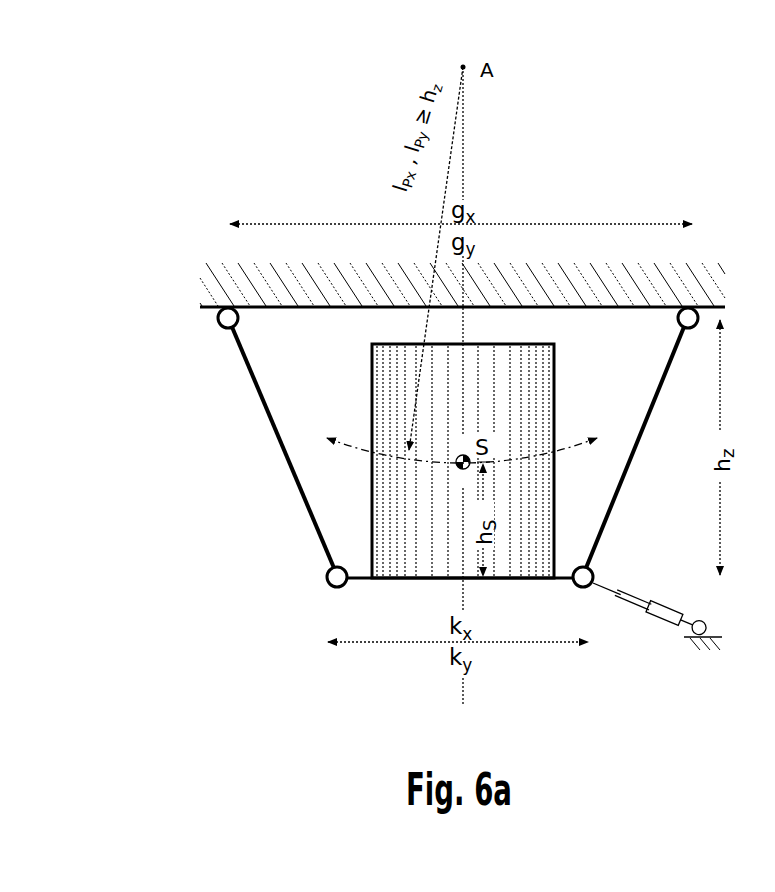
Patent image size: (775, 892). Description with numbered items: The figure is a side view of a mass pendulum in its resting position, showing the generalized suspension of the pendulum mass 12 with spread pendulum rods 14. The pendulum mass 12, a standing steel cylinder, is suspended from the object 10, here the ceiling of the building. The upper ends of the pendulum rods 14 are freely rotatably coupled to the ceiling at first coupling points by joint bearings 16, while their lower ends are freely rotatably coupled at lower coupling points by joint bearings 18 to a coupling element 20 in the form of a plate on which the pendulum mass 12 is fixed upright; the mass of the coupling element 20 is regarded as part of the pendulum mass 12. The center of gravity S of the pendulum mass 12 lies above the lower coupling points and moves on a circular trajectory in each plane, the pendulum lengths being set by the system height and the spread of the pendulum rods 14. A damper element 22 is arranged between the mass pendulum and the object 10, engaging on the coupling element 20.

The object 10 is at (200, 286).
The pendulum mass 12 is at (372, 378).
The pendulum rods 14 is at (280, 451).
The joint bearings 16 is at (216, 319).
The joint bearings 18 is at (326, 577).
The coupling element 20 is at (363, 584).
The damper elements 22 is at (648, 594).